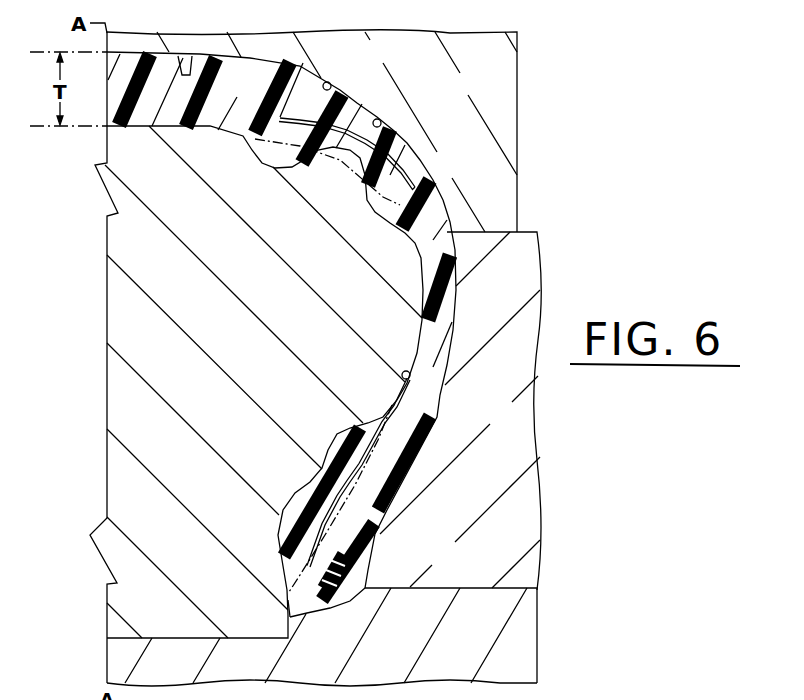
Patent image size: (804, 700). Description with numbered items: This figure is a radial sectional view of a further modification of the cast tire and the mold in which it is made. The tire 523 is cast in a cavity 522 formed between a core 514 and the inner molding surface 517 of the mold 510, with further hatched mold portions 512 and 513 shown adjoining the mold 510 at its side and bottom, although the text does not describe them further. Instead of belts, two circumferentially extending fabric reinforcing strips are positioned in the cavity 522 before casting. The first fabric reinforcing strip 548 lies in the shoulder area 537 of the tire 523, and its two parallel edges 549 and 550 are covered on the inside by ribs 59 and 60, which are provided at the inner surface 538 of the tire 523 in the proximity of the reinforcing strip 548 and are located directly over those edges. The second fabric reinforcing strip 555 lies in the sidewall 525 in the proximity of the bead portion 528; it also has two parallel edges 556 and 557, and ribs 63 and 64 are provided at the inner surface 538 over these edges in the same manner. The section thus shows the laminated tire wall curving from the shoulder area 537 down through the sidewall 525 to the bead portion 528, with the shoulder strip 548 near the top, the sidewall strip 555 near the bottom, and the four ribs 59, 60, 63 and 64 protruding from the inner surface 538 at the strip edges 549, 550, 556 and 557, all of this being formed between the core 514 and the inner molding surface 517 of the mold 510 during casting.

The mold 510 is at (521, 108).
The lower support block 512 is at (537, 621).
The side support block 513 is at (538, 478).
The core 514 is at (108, 329).
The inner molding surface 517 is at (328, 82).
The cavity 522 is at (383, 126).
The tire 523 is at (448, 290).
The sidewall 525 is at (420, 416).
The bead portion 528 is at (365, 567).
The shoulder area 537 is at (430, 212).
The inner surface 538 is at (408, 381).
The fabric reinforcing strip 548 is at (412, 172).
The parallel edge 550 is at (417, 186).
The parallel edge 549 is at (282, 117).
The fabric reinforcing strip 555 is at (340, 514).
The parallel edge 556 is at (383, 457).
The parallel edge 557 is at (283, 565).
The rib 59 is at (263, 150).
The rib 60 is at (378, 220).
The rib 63 is at (330, 430).
The rib 64 is at (285, 527).